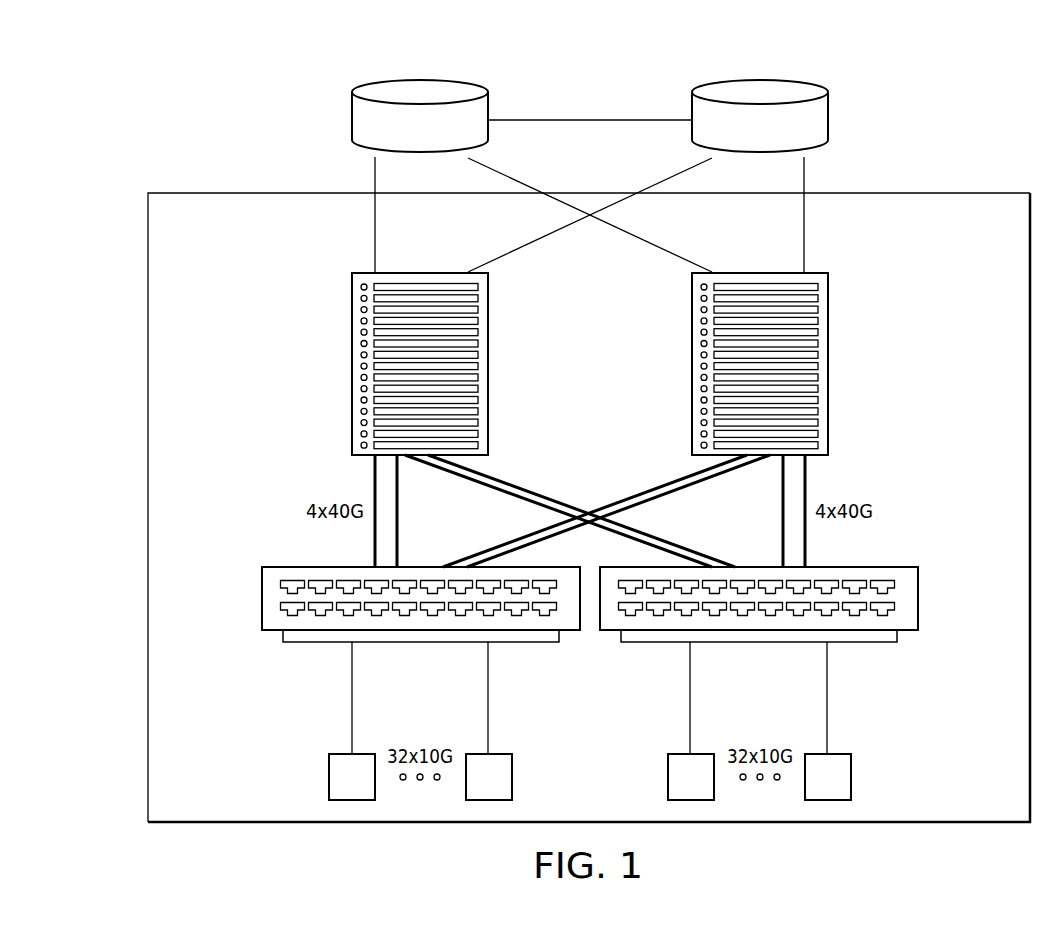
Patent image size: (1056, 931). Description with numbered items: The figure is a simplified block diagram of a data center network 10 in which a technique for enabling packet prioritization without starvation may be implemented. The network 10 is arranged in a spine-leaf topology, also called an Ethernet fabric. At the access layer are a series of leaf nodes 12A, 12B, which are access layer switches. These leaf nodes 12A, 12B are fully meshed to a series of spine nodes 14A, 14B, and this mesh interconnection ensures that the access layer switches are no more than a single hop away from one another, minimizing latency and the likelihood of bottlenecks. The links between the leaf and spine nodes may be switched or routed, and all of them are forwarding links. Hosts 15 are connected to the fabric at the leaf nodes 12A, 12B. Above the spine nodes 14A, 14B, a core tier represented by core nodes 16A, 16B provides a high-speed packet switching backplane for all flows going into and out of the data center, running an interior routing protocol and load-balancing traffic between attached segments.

The data center network 10 is at (266, 116).
The core node 16A is at (418, 78).
The core node 16B is at (761, 78).
The spine node 14A is at (352, 362).
The spine node 14B is at (828, 362).
The leaf node 12A is at (262, 598).
The leaf node 12B is at (918, 598).
The host 15 is at (329, 776).